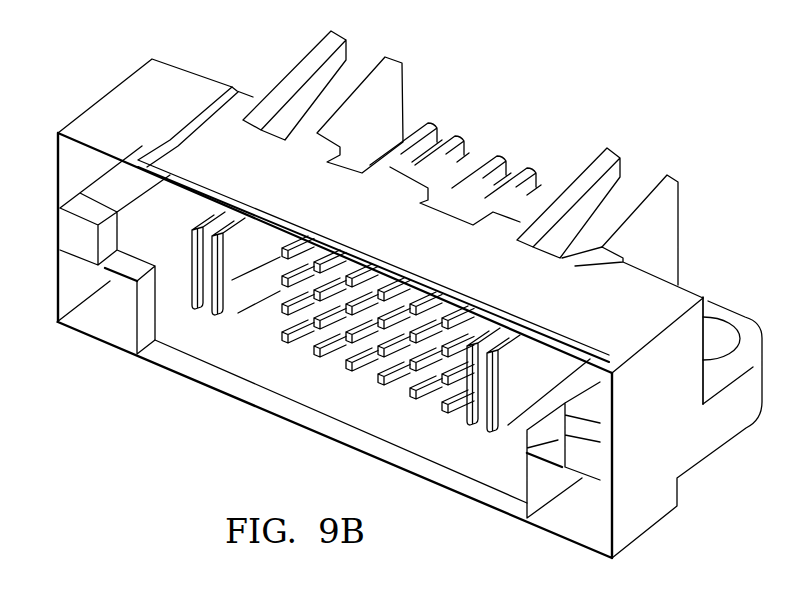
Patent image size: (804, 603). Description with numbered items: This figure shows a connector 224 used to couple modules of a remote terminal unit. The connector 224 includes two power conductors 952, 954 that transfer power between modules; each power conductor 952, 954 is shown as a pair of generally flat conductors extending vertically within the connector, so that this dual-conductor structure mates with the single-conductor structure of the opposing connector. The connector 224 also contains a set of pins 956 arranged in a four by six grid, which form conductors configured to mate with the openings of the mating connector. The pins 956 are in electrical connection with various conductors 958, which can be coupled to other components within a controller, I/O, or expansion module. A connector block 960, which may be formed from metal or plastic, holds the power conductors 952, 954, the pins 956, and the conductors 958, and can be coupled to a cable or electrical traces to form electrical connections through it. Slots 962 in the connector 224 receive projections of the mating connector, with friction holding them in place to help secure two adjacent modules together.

The connector 224 is at (577, 73).
The power conductor 952 is at (201, 332).
The power conductor 954 is at (476, 449).
The pins 956 is at (333, 353).
The conductors 958 is at (497, 155).
The connector block 960 is at (628, 190).
The slots 962 is at (353, 72).